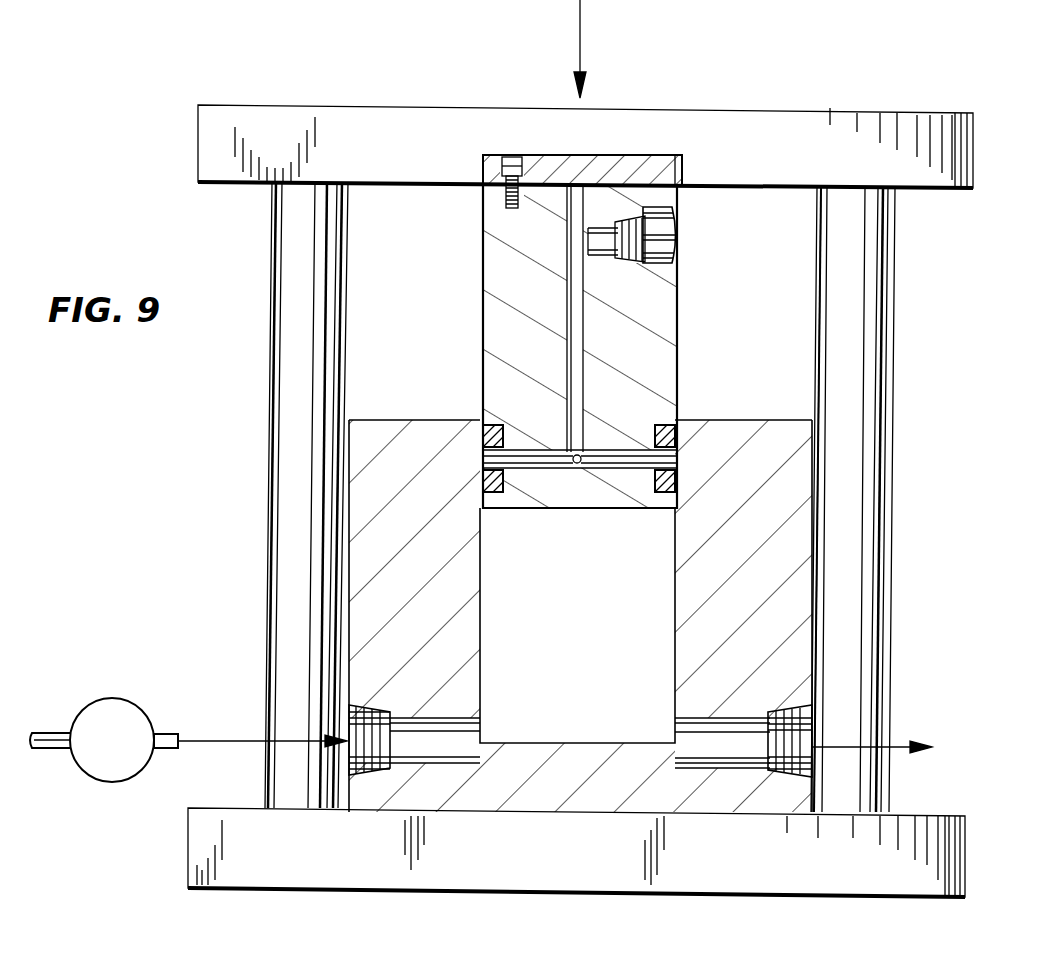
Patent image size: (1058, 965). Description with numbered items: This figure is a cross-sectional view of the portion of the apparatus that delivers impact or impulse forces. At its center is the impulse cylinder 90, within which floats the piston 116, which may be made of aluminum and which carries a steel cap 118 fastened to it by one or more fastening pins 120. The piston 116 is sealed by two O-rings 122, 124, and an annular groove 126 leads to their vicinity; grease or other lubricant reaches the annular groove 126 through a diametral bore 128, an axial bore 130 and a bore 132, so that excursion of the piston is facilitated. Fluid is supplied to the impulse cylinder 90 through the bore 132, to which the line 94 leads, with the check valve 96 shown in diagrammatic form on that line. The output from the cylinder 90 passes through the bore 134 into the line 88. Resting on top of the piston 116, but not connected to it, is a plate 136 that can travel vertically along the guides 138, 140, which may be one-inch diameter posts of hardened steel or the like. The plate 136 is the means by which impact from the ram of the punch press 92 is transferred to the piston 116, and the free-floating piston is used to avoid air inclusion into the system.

The line 88 is at (862, 745).
The impulse cylinder 90 is at (388, 420).
The punch press 92 is at (582, 48).
The line 94 is at (170, 735).
The check valve 96 is at (132, 700).
The piston 116 is at (495, 251).
The steel cap 118 is at (637, 108).
The fastening pins 120 is at (498, 201).
The O-ring 122 is at (672, 425).
The O-ring 124 is at (677, 473).
The annular groove 126 is at (613, 463).
The diametral bore 128 is at (556, 466).
The axial bore 130 is at (567, 305).
The bore 132 is at (674, 204).
The bore 134 is at (686, 748).
The plate 136 is at (833, 114).
The guide 138 is at (300, 332).
The guide 140 is at (868, 306).